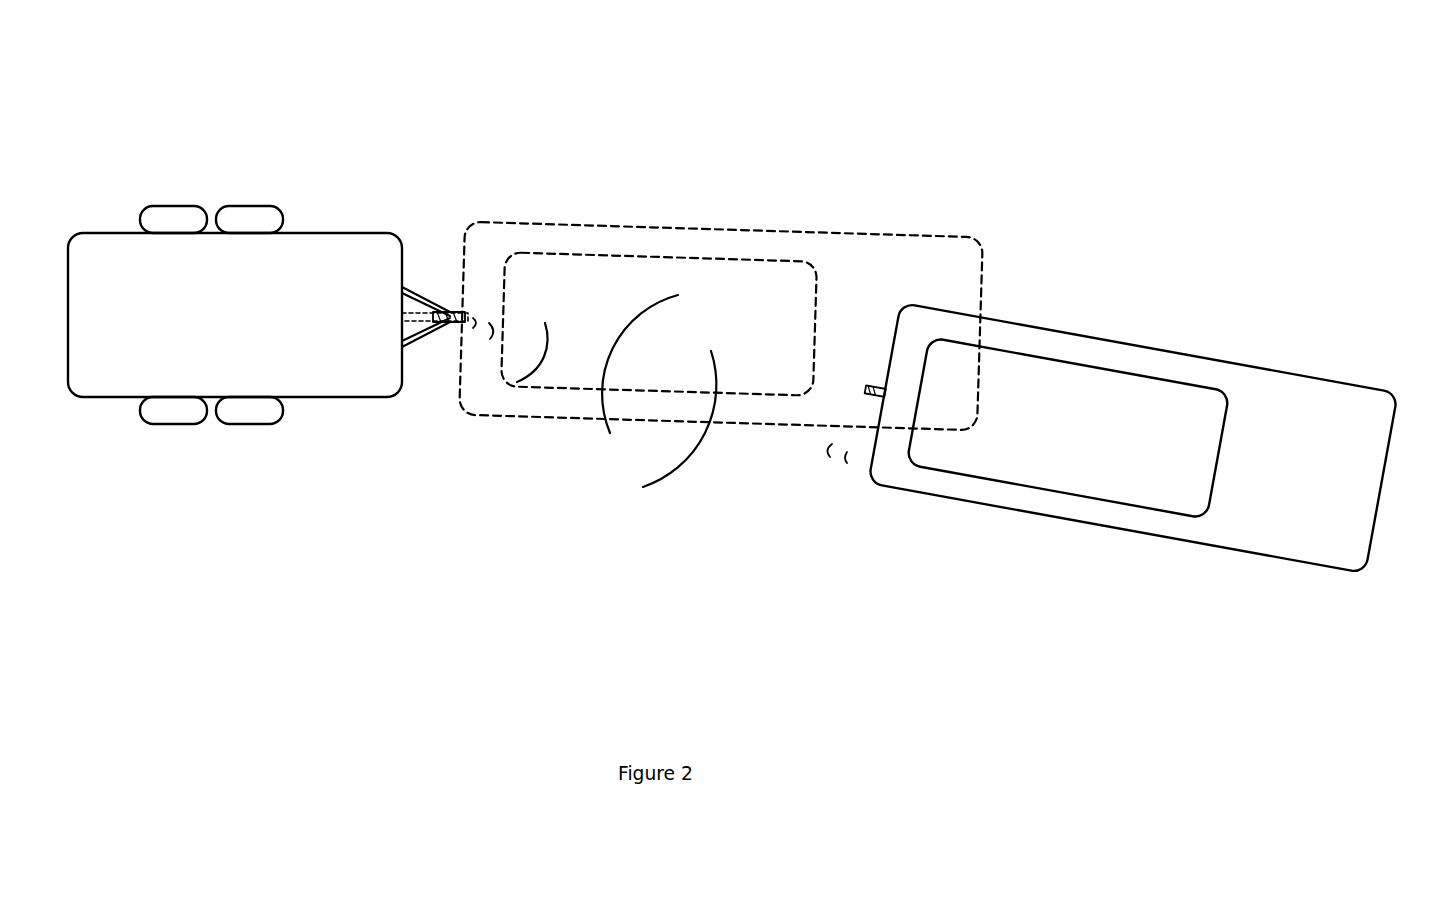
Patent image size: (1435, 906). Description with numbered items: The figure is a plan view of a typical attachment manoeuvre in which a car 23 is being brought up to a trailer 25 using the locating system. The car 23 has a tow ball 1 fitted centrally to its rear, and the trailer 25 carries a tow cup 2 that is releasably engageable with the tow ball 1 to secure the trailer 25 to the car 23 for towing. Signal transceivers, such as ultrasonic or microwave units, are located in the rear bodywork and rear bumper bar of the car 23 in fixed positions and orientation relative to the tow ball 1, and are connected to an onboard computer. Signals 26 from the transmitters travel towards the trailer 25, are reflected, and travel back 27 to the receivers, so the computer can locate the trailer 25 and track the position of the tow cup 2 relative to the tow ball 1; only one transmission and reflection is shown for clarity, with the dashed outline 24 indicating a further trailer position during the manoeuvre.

The tow ball 1 is at (866, 383).
The tow cup 2 is at (448, 311).
The car 23 is at (1102, 458).
The target trailer position (inner outline) 24 is at (573, 380).
The trailer 25 is at (320, 372).
The signals 26 is at (805, 403).
The reflected signals travelling back 27 is at (645, 493).